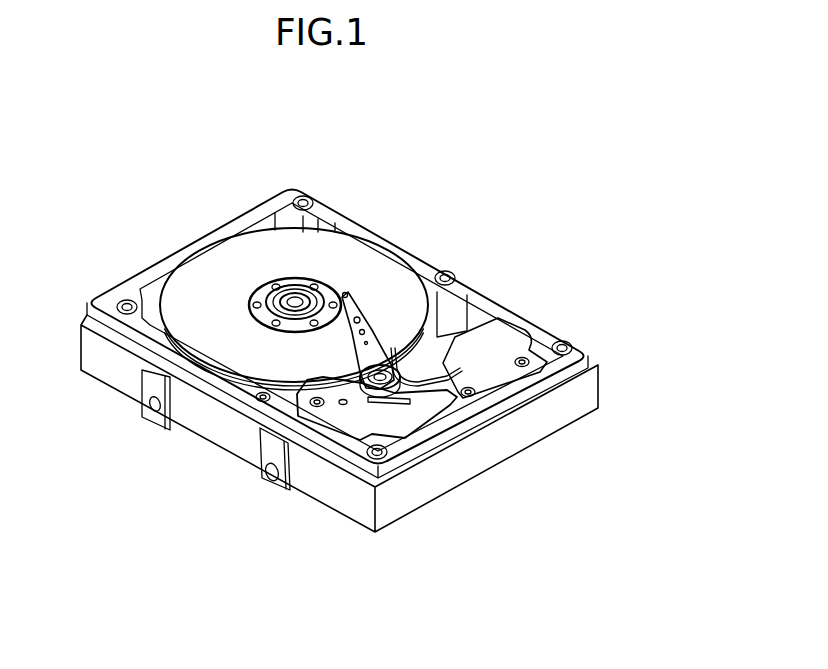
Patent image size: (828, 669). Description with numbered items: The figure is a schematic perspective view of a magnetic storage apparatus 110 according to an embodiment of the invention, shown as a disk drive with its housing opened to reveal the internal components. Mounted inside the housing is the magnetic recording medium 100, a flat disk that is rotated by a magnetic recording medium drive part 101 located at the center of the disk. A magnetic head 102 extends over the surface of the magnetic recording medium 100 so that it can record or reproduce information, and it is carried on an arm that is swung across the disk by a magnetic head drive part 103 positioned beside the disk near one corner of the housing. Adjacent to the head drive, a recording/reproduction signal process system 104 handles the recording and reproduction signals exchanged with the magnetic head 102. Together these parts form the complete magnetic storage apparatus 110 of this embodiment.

The magnetic storage apparatus 110 is at (112, 147).
The magnetic recording medium 100 is at (334, 263).
The magnetic recording medium drive part 101 is at (256, 292).
The magnetic head 102 is at (346, 294).
The magnetic head drive part 103 is at (402, 407).
The recording/reproduction signal process system 104 is at (508, 343).